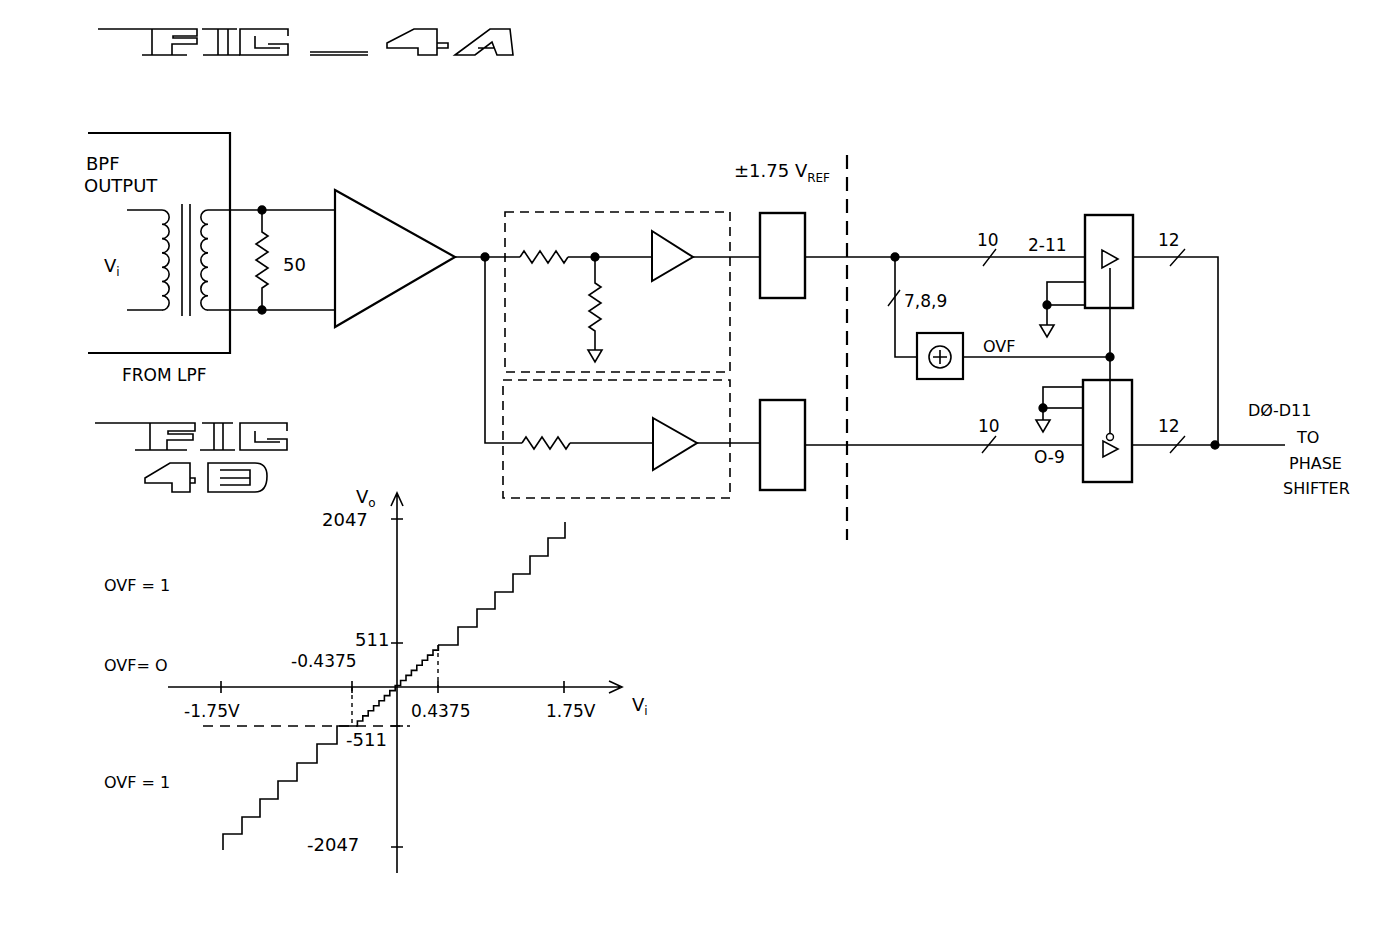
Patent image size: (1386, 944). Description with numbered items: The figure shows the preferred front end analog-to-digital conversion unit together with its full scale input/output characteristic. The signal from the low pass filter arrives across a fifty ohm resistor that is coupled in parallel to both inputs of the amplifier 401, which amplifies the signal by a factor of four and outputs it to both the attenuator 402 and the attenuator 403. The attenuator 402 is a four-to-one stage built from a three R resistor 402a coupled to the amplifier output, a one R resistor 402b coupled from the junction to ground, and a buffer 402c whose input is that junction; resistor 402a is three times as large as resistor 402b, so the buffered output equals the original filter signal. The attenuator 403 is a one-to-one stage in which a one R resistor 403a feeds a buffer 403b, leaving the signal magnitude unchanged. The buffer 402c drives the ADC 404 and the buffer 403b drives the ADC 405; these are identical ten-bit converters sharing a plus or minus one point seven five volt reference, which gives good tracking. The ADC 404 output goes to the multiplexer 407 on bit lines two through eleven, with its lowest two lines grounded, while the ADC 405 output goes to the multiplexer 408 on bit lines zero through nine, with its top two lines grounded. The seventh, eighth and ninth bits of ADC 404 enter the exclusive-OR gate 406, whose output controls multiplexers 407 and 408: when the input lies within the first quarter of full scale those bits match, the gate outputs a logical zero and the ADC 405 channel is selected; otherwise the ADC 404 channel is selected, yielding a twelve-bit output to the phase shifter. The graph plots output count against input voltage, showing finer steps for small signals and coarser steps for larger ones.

The amplifier 401 is at (400, 227).
The attenuator 402 is at (608, 206).
The 3 R resistor 402a is at (568, 262).
The 1 R resistor 402b is at (587, 318).
The buffer 402c is at (665, 272).
The attenuator 403 is at (494, 457).
The 1 R resistor 403a is at (543, 457).
The buffer 403b is at (683, 470).
The ADC 404 is at (797, 300).
The ADC 405 is at (790, 400).
The exclusive-OR gate 406 is at (963, 342).
The multiplexer 407 is at (1105, 214).
The multiplexer 408 is at (1128, 380).